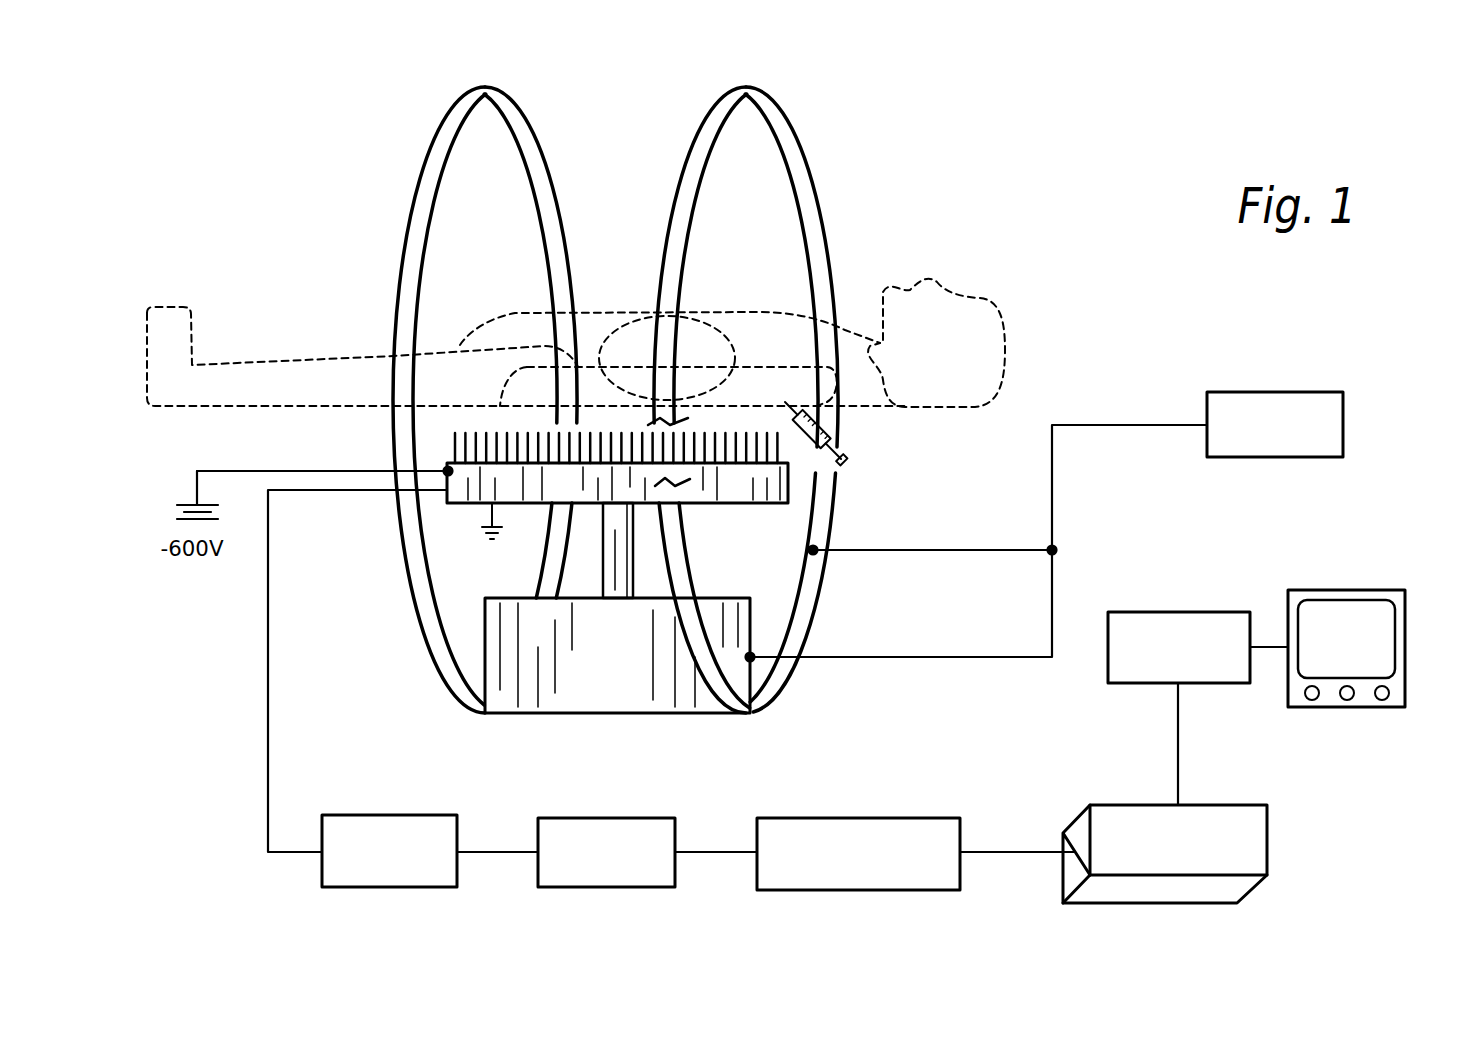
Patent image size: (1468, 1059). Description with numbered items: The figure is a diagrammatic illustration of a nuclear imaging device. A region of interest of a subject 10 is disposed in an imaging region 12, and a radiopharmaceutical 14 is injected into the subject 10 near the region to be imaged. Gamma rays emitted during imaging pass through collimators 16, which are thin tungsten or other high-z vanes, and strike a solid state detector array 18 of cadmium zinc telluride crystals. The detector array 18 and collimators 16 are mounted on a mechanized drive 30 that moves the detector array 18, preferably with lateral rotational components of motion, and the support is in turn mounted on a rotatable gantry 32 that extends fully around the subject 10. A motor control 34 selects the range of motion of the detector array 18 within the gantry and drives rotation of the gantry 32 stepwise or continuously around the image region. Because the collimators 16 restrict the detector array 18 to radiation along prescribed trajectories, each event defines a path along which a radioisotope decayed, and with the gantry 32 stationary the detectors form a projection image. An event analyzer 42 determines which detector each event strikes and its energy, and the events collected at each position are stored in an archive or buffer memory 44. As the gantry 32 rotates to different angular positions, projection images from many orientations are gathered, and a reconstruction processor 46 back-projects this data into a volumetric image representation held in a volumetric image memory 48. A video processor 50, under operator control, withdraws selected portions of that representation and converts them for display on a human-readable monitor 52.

The subject 10 is at (993, 328).
The imaging region 12 is at (617, 327).
The radiopharmaceutical 14 is at (838, 432).
The collimators 16 is at (455, 437).
The detector array 18 is at (727, 493).
The mechanized drive 30 is at (608, 702).
The rotatable gantry 32 is at (800, 183).
The motor control 34 is at (1277, 392).
The event analyzer 42 is at (405, 815).
The archive or buffer memory 44 is at (617, 818).
The reconstruction processor 46 is at (877, 818).
The volumetric image memory 48 is at (1228, 805).
The video processor 50 is at (1200, 612).
The monitor 52 is at (1405, 647).